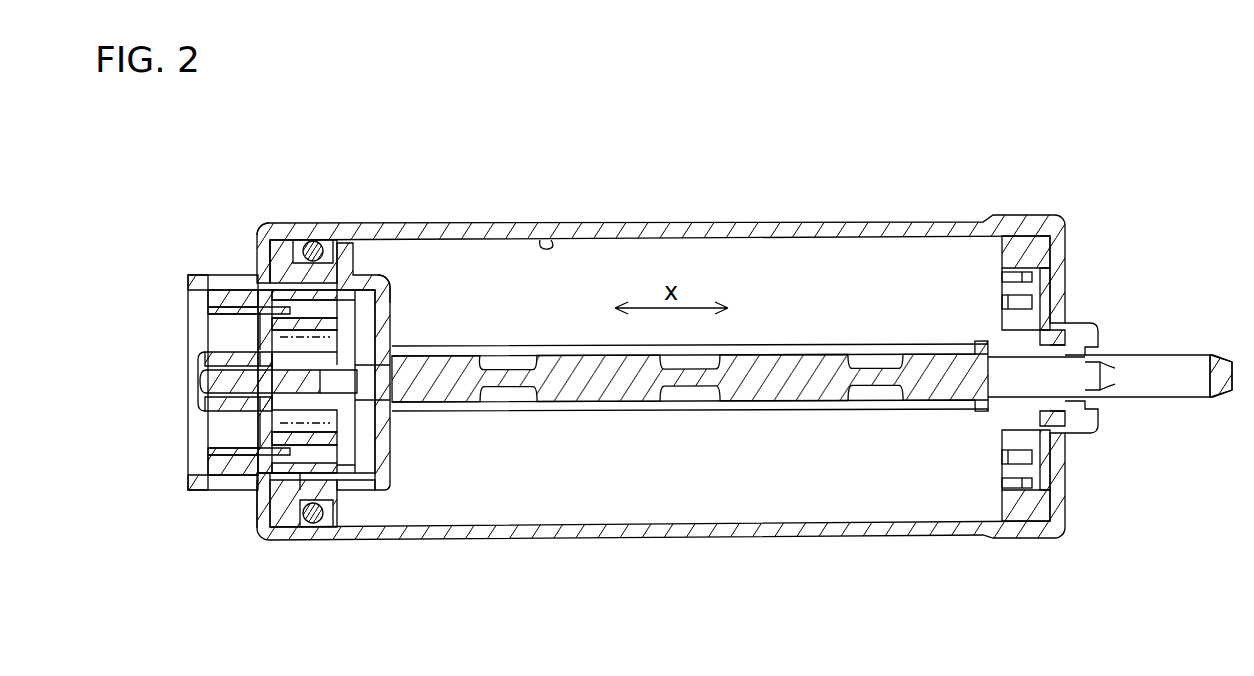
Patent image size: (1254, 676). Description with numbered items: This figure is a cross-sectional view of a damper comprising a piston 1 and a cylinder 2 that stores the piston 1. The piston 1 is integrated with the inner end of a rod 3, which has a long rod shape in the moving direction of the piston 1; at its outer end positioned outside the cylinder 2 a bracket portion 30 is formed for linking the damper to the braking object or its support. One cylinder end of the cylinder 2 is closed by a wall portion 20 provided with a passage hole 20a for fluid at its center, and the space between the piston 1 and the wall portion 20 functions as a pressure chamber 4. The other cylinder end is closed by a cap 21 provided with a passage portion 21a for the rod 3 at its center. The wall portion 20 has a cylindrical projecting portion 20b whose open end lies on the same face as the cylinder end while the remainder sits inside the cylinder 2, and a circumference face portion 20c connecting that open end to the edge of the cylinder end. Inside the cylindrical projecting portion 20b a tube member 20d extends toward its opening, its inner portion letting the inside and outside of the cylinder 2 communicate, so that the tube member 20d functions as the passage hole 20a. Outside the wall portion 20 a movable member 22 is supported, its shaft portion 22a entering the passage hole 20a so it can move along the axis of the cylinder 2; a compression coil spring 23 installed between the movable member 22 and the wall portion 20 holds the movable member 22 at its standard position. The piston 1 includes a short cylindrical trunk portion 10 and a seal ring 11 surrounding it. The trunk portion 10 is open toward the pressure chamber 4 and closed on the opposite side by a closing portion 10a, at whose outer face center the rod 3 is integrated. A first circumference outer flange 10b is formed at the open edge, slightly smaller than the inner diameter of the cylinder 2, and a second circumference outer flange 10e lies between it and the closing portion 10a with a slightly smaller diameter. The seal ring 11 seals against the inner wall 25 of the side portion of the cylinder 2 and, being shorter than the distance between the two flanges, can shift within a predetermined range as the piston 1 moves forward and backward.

The piston 1 is at (372, 262).
The cylinder 2 is at (697, 223).
The rod 3 is at (800, 405).
The pressure chamber 4 is at (278, 254).
The trunk portion 10 is at (348, 500).
The closing portion 10a is at (391, 303).
The first circumference outer flange 10b is at (305, 244).
The second circumference outer flange 10e is at (343, 258).
The seal ring 11 is at (317, 525).
The wall portion 20 is at (372, 432).
The passage hole 20a is at (396, 373).
The cylindrical projecting portion 20b is at (294, 490).
The circumference face portion 20c is at (253, 515).
The tube member 20d is at (210, 433).
The cap 21 is at (1055, 280).
The passage portion 21a is at (1060, 430).
The movable member 22 is at (200, 365).
The shaft portion 22a is at (210, 405).
The compression coil spring 23 is at (215, 492).
The inner wall 25 is at (549, 226).
The bracket portion 30 is at (1172, 365).